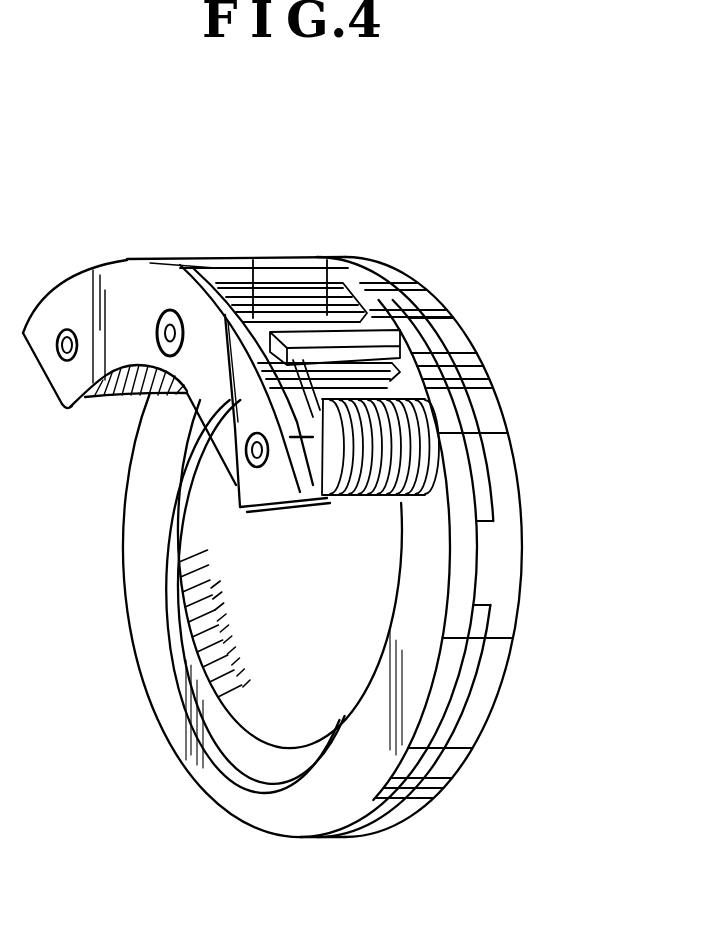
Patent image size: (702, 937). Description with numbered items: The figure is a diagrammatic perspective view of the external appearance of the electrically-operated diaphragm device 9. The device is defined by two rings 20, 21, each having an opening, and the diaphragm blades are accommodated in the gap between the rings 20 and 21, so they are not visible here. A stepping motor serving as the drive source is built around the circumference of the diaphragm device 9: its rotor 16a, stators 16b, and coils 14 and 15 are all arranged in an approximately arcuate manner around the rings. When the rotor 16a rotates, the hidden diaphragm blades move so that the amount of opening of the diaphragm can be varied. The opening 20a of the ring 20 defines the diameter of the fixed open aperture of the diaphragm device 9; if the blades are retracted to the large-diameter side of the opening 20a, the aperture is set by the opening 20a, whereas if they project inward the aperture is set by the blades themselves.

The electrically-operated diaphragm device 9 is at (589, 500).
The coil 14 is at (337, 407).
The coil 15 is at (120, 387).
The rotor 16a is at (327, 318).
The stators 16b is at (262, 283).
The ring 20 is at (270, 714).
The opening 20a is at (233, 613).
The ring 21 is at (317, 773).